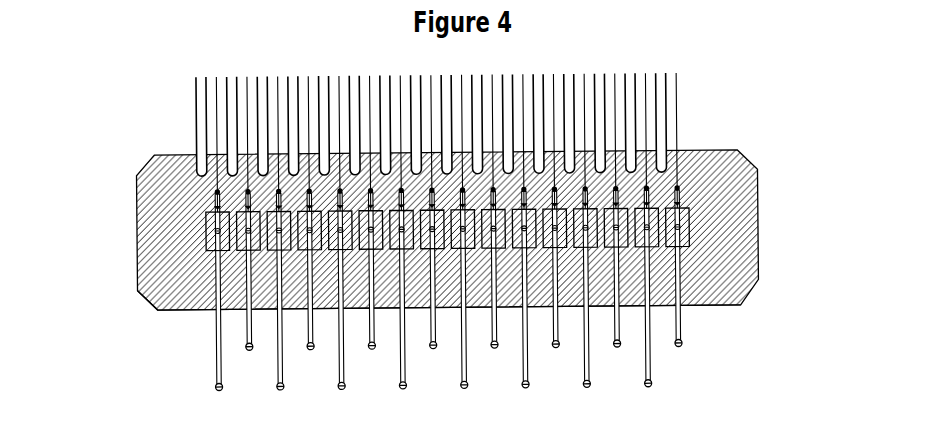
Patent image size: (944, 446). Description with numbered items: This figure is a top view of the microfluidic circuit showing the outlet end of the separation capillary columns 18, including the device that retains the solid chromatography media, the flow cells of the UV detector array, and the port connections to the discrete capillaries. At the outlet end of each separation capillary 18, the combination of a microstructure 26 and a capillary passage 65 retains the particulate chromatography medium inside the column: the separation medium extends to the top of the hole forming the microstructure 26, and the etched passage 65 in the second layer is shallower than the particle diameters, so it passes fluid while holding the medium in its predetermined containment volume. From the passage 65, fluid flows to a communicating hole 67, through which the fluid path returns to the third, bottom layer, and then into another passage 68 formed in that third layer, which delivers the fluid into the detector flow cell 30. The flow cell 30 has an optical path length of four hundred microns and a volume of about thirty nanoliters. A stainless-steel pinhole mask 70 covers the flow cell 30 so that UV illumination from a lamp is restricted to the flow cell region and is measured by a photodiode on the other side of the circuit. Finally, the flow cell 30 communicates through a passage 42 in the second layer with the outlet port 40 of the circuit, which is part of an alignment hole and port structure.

The separation capillary column 18 is at (678, 131).
The microstructure 26 is at (688, 180).
The capillary passage 65 is at (683, 198).
The communicating hole 67 is at (681, 207).
The passage 68 is at (687, 222).
The detector flow cell 30 is at (685, 232).
The passage 42 is at (675, 288).
The outlet port 40 is at (681, 347).
The stainless-steel pinhole mask 70 is at (177, 310).